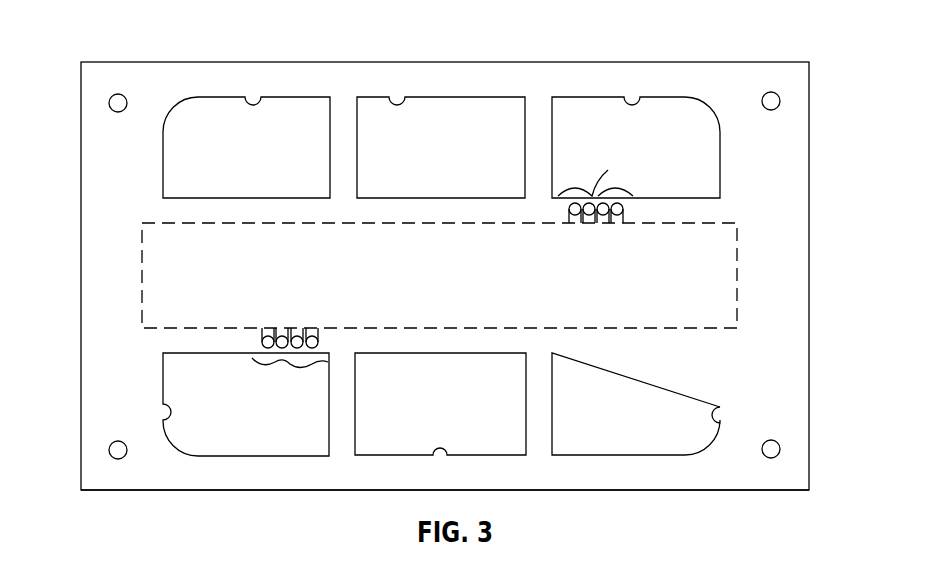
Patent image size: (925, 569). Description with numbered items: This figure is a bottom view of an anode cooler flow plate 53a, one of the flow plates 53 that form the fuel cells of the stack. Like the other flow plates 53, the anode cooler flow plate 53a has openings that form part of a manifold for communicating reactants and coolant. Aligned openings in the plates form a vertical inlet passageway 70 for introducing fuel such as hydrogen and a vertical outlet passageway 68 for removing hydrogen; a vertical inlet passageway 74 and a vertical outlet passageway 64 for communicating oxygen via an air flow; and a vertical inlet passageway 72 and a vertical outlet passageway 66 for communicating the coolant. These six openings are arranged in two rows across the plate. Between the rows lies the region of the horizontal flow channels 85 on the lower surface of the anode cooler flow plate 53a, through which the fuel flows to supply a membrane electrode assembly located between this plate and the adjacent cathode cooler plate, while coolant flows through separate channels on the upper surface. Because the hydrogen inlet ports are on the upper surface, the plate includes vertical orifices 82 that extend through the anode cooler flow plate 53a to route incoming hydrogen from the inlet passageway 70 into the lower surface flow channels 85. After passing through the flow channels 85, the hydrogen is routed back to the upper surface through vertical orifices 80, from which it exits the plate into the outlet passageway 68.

The flow plate 53 is at (813, 296).
The anode cooler flow plate 53a is at (716, 493).
The outlet passageway 64 is at (720, 405).
The outlet passageway 66 is at (435, 450).
The outlet passageway 68 is at (163, 425).
The inlet passageway 70 is at (632, 106).
The inlet passageway 72 is at (400, 106).
The inlet passageway 74 is at (255, 106).
The vertical orifices 80 is at (289, 363).
The vertical orifices 82 is at (608, 170).
The flow channels 85 is at (142, 263).